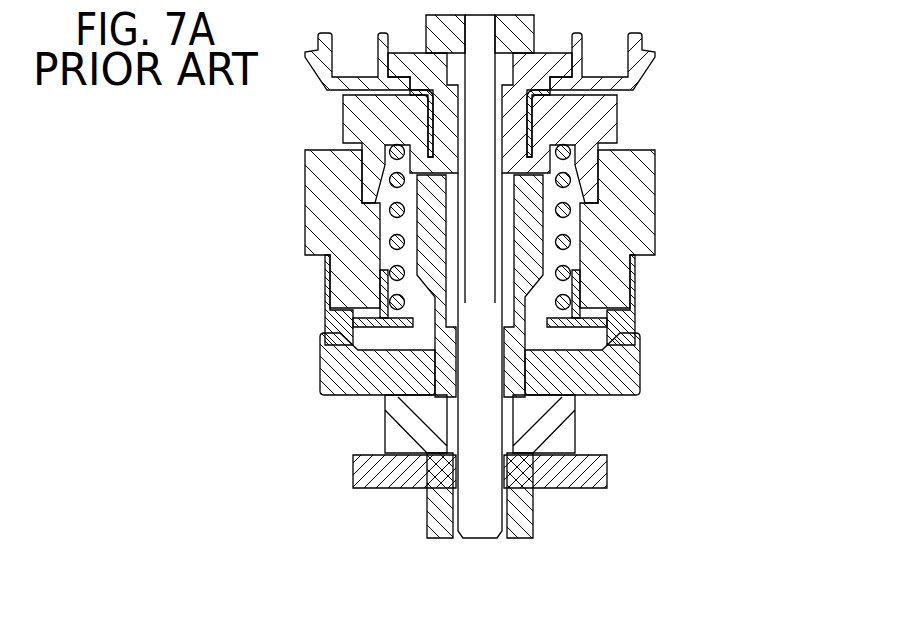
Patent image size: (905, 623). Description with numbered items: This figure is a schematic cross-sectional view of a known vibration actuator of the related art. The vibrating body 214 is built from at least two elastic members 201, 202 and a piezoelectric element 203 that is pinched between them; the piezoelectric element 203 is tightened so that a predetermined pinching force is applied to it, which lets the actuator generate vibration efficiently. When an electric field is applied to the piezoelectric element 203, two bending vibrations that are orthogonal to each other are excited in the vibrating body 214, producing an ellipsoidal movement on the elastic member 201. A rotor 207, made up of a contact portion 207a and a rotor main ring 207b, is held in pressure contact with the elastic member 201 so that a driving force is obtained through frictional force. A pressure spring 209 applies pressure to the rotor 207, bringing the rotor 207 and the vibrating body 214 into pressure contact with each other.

The elastic member 201 is at (630, 372).
The elastic member 202 is at (555, 472).
The piezoelectric element 203 is at (570, 420).
The rotor 207 is at (391, 247).
The contact portion 207a is at (418, 300).
The rotor main ring 207b is at (307, 207).
The pressure spring 209 is at (571, 258).
The vibrating body 214 is at (580, 435).